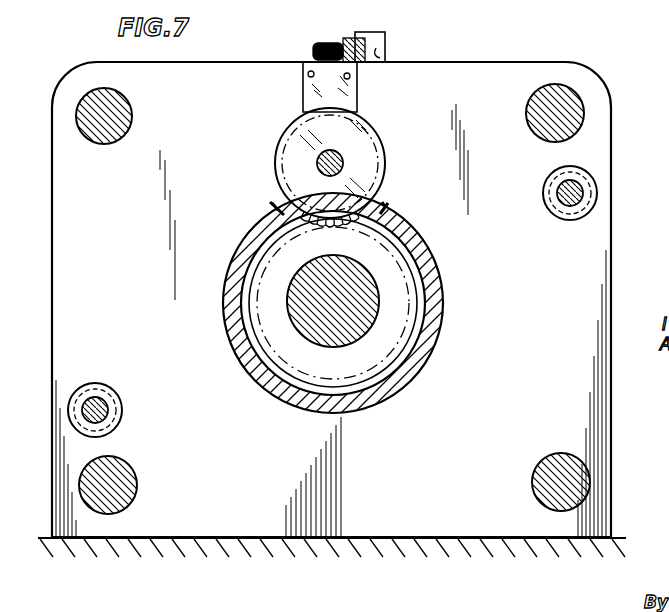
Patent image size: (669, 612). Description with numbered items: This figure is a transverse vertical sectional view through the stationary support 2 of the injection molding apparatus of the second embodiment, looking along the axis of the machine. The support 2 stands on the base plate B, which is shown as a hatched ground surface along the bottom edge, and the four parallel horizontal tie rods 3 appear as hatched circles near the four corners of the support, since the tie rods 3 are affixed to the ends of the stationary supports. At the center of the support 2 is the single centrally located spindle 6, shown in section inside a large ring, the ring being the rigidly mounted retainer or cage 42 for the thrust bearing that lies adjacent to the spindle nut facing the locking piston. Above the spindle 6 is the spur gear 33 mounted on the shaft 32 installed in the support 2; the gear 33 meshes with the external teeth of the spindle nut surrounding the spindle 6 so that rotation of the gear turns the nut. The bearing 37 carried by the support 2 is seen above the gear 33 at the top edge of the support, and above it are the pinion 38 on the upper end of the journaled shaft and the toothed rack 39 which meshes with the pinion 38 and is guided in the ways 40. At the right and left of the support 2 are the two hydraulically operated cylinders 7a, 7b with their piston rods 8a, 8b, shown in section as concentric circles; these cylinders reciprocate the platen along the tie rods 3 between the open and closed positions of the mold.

The stationary support 2 is at (595, 284).
The base plate B is at (218, 545).
The tie rods 3 is at (118, 113).
The spindle 6 is at (318, 270).
The hydraulically operated cylinder 7a is at (592, 182).
The piston rod 8a is at (585, 200).
The hydraulically operated cylinder 7b is at (82, 390).
The piston rod 8b is at (105, 402).
The shaft 32 is at (316, 167).
The spur gear 33 is at (363, 141).
The bearing 37 is at (302, 96).
The pinion 38 is at (324, 45).
The toothed rack 39 is at (366, 38).
The ways 40 is at (380, 56).
The retainer or cage 42 is at (430, 337).